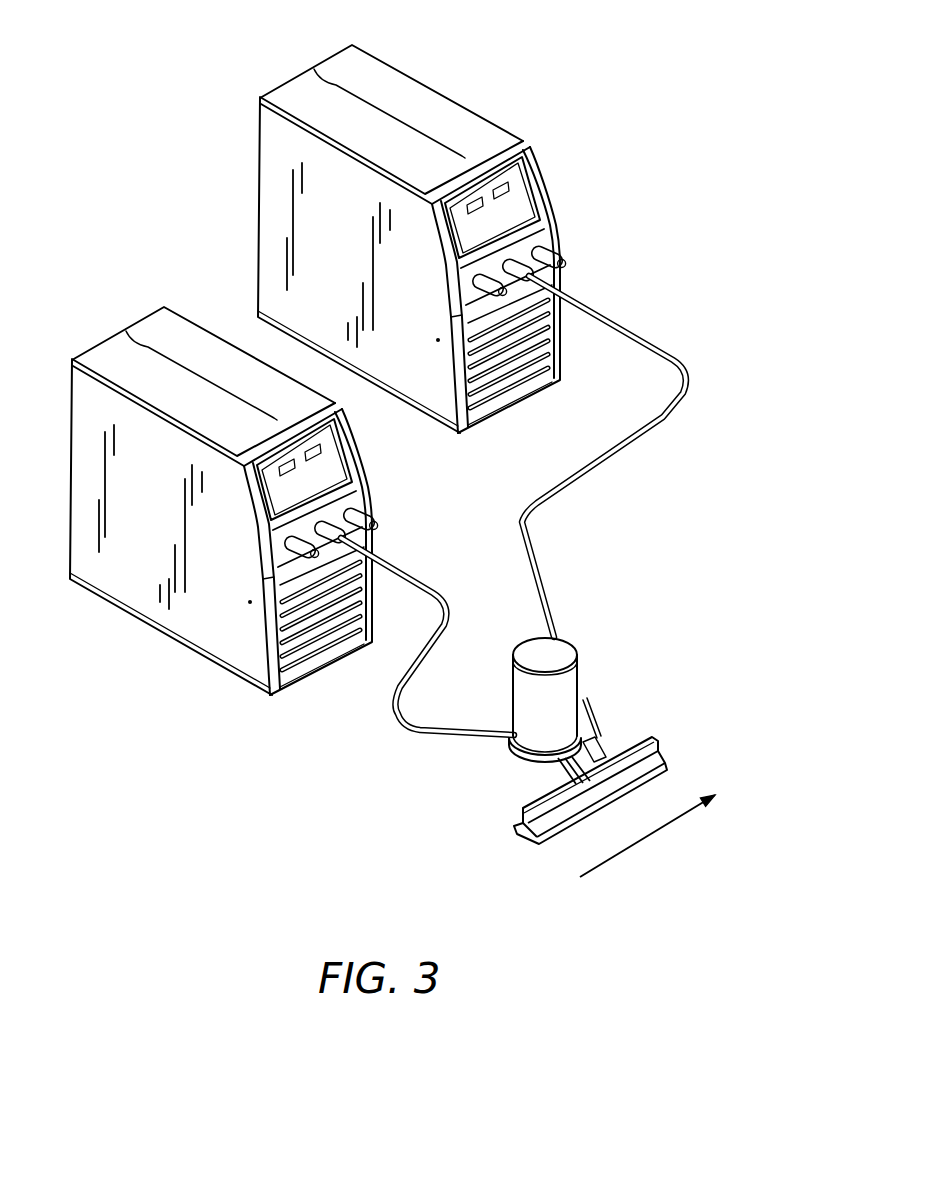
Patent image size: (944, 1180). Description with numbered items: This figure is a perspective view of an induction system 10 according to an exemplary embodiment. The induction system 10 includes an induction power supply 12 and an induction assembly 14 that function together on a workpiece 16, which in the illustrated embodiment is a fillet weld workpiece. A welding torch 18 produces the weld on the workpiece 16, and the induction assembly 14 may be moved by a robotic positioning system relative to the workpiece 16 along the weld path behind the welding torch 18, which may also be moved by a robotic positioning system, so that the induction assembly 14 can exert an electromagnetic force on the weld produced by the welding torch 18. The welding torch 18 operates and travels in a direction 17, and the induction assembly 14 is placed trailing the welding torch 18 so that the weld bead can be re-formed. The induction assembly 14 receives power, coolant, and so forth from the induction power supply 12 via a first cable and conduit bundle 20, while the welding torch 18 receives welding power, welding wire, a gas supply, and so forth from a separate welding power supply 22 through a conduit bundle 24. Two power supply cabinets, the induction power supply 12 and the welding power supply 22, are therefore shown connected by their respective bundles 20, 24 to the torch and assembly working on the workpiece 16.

The induction system 10 is at (363, 757).
The induction power supply 12 is at (106, 316).
The induction assembly 14 is at (515, 773).
The workpiece 16 is at (568, 832).
The direction 17 is at (642, 840).
The welding torch 18 is at (630, 714).
The first cable and conduit bundle 20 is at (433, 653).
The welding power supply 22 is at (474, 87).
The conduit bundle 24 is at (617, 453).